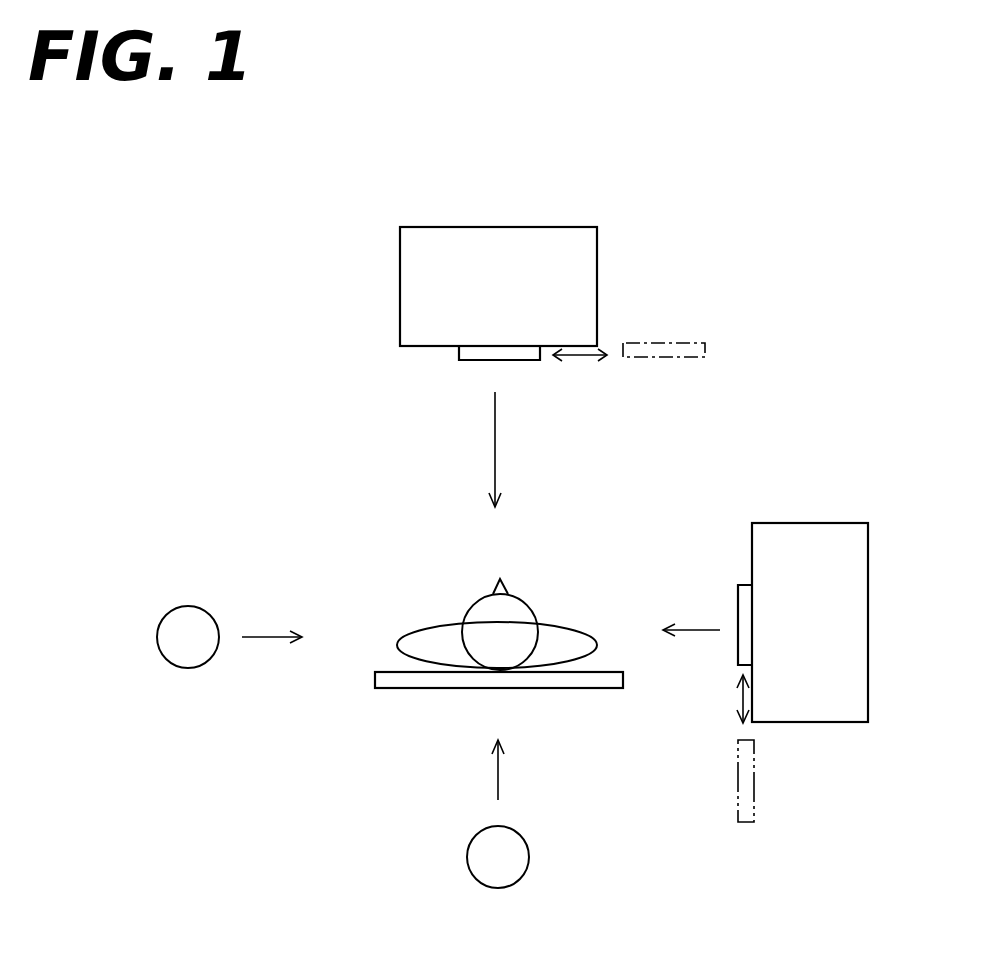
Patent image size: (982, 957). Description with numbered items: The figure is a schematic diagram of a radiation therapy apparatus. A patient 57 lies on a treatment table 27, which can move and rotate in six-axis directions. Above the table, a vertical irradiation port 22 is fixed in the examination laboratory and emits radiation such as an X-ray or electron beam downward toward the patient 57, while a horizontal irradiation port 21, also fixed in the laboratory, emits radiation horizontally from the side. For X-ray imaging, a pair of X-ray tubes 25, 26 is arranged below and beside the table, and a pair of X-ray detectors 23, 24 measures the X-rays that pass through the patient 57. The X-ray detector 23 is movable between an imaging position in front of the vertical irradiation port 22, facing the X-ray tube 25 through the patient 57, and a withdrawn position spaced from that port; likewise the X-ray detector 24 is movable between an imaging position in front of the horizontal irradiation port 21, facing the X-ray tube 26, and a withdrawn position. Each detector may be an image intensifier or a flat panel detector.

The horizontal irradiation port 21 is at (830, 700).
The vertical irradiation port 22 is at (572, 282).
The X-ray detector 23 is at (518, 360).
The X-ray detector 24 is at (738, 600).
The X-ray tube 25 is at (518, 860).
The X-ray tube 26 is at (190, 657).
The treatment table 27 is at (573, 688).
The patient 57 is at (443, 640).